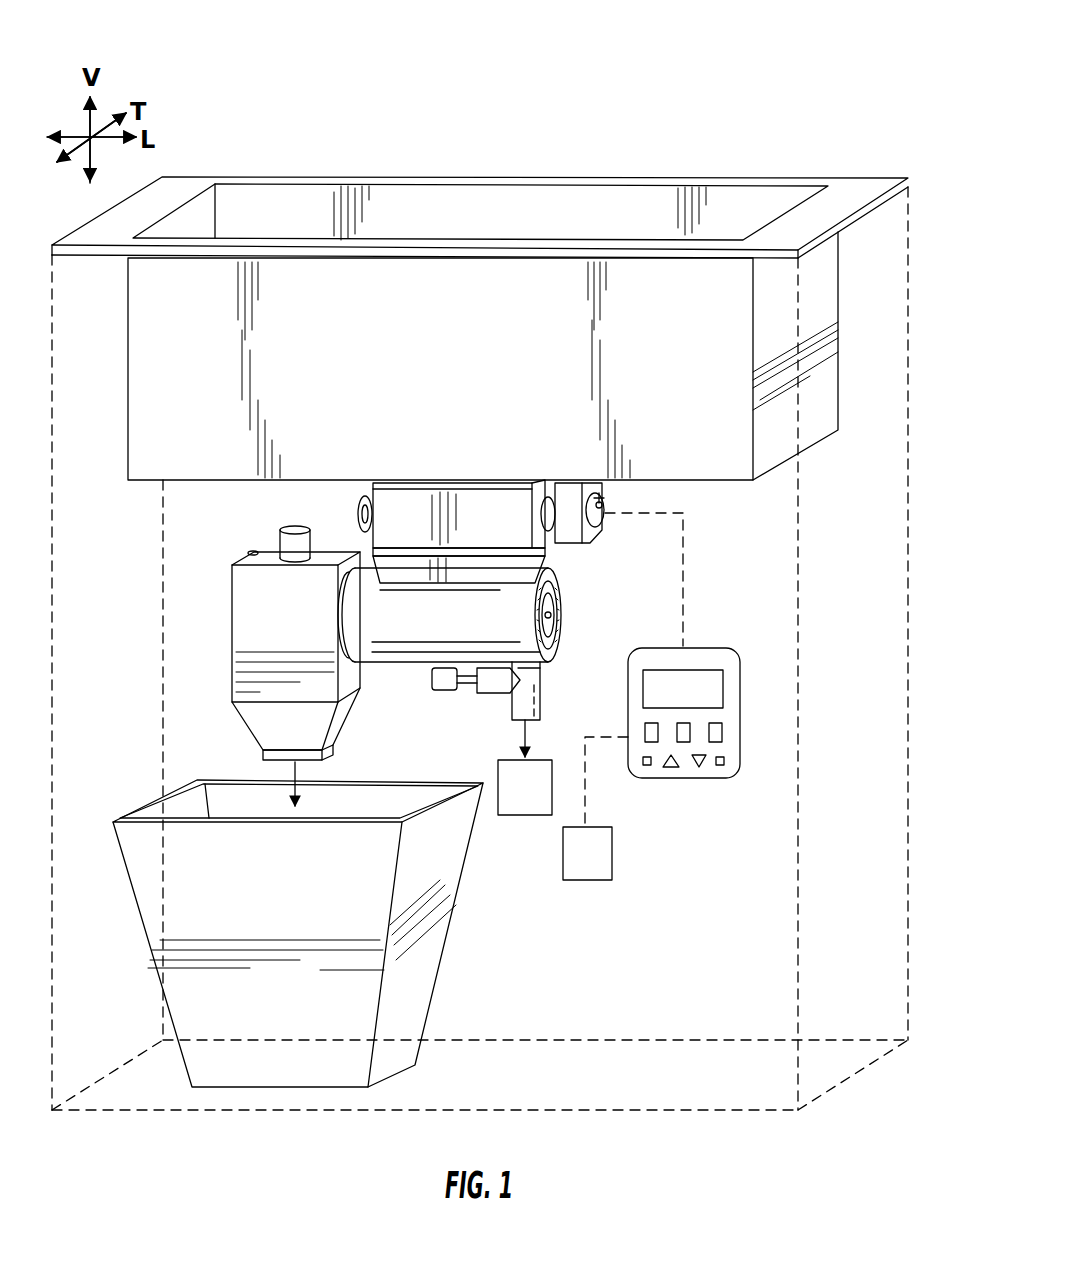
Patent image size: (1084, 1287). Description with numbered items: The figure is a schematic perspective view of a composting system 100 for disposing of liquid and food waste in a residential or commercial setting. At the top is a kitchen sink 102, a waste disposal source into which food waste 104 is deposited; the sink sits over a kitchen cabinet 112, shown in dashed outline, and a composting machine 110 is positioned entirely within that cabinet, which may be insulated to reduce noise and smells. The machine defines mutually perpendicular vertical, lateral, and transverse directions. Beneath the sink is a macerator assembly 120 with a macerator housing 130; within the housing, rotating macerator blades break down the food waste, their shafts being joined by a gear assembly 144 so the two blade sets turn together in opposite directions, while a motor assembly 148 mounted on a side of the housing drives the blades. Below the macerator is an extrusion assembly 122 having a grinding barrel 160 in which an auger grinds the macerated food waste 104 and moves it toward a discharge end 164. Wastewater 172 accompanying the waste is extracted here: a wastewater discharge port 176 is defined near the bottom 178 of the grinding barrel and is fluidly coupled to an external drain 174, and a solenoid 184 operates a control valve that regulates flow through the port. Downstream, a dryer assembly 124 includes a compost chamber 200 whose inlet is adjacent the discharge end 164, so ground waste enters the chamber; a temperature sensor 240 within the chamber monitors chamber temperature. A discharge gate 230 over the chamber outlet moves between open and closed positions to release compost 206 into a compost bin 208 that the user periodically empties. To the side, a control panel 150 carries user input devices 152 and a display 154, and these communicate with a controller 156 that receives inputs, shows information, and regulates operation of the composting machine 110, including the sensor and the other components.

The composting system 100 is at (232, 45).
The kitchen sink 102 is at (855, 190).
The food waste 104 is at (591, 218).
The composting machine 110 is at (203, 620).
The kitchen cabinet 112 is at (909, 438).
The macerator assembly 120 is at (411, 492).
The extrusion assembly 122 is at (575, 622).
The dryer assembly 124 is at (213, 684).
The macerator housing 130 is at (485, 503).
The gear assembly 144 is at (362, 496).
The motor assembly 148 is at (577, 490).
The control panel 150 is at (705, 695).
The user input devices 152 is at (700, 762).
The display 154 is at (724, 688).
The controller 156 is at (606, 871).
The grinding barrel 160 is at (485, 641).
The discharge end 164 is at (336, 610).
The wastewater 172 is at (527, 738).
The external drain 174 is at (543, 804).
The wastewater discharge port 176 is at (531, 672).
The bottom 178 is at (420, 670).
The solenoid 184 is at (445, 670).
The compost chamber 200 is at (305, 644).
The compost 206 is at (298, 785).
The compost bin 208 is at (293, 1016).
The discharge gate 230 is at (323, 757).
The temperature sensor 240 is at (282, 756).